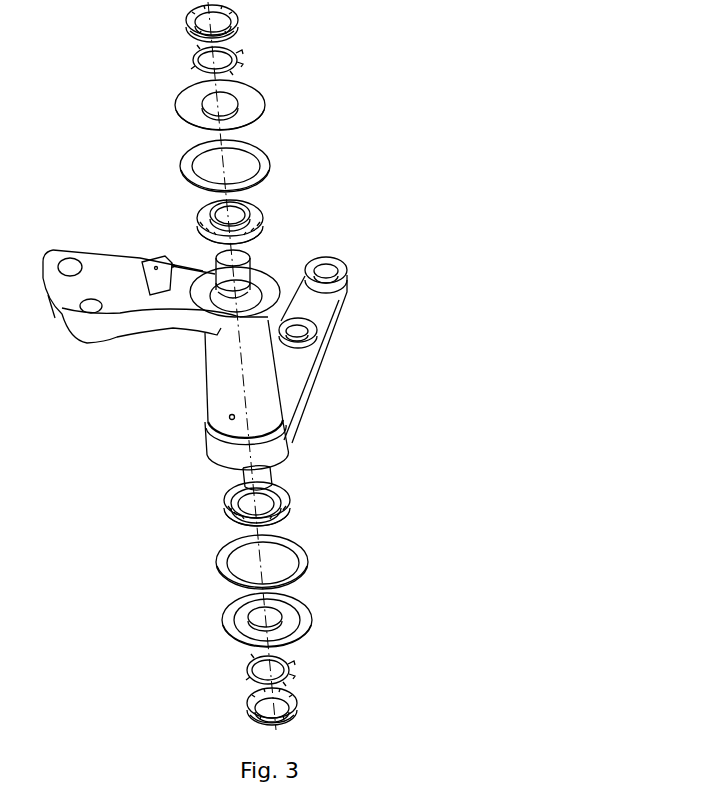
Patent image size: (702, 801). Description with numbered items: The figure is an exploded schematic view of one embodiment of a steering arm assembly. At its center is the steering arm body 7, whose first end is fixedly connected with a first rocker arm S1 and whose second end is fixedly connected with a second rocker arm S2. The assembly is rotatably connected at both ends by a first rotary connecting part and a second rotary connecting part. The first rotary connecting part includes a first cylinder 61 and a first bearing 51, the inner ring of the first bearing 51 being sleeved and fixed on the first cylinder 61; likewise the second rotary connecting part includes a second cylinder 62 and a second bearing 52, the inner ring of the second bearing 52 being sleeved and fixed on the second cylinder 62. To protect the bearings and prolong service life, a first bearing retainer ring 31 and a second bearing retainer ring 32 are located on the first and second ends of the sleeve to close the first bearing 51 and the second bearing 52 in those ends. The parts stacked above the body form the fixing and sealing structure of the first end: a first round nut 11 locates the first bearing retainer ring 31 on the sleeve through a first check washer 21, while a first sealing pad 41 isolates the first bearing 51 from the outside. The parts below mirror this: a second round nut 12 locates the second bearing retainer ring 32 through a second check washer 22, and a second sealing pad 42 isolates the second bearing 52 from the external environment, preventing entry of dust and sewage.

The first round nut 11 is at (237, 22).
The first check washer 21 is at (238, 62).
The first bearing retainer ring 31 is at (240, 116).
The first sealing pad 41 is at (268, 168).
The first bearing 51 is at (260, 220).
The first rocker arm S1 is at (105, 280).
The second rocker arm S2 is at (328, 307).
The first cylinder 61 is at (317, 333).
The steering arm body 7 is at (260, 400).
The second cylinder 62 is at (242, 481).
The second bearing 52 is at (283, 505).
The second sealing pad 42 is at (295, 553).
The second bearing retainer ring 32 is at (283, 613).
The second check washer 22 is at (290, 668).
The second round nut 12 is at (296, 705).